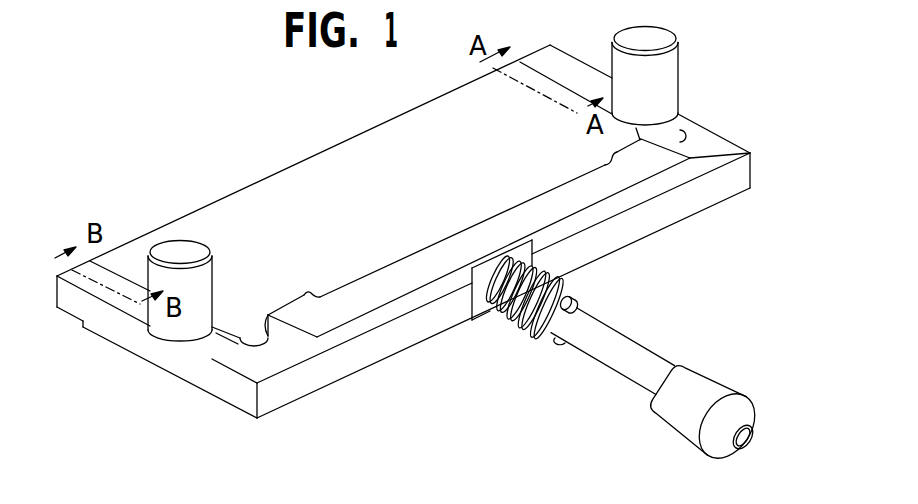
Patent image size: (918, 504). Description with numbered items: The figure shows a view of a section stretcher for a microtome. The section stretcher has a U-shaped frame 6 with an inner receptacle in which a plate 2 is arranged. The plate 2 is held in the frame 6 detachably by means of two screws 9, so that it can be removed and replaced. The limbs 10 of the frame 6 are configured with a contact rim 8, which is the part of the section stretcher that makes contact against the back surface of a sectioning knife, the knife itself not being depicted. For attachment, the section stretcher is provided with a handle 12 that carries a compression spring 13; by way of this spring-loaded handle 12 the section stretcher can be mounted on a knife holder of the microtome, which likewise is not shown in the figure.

The plate 2 is at (348, 153).
The U-shaped frame 6 is at (328, 372).
The contact rim 8 is at (55, 307).
The screws 9 is at (660, 76).
The limbs 10 is at (213, 387).
The handle 12 is at (616, 352).
The compression spring 13 is at (512, 318).